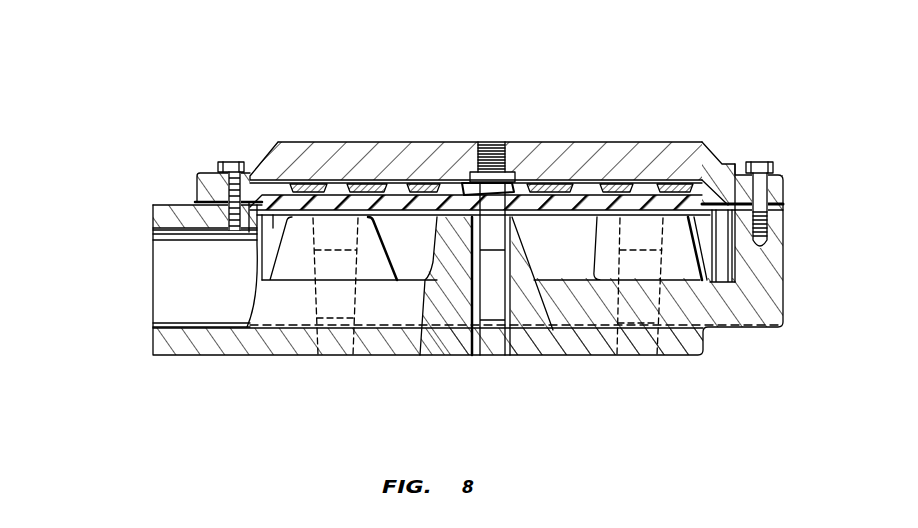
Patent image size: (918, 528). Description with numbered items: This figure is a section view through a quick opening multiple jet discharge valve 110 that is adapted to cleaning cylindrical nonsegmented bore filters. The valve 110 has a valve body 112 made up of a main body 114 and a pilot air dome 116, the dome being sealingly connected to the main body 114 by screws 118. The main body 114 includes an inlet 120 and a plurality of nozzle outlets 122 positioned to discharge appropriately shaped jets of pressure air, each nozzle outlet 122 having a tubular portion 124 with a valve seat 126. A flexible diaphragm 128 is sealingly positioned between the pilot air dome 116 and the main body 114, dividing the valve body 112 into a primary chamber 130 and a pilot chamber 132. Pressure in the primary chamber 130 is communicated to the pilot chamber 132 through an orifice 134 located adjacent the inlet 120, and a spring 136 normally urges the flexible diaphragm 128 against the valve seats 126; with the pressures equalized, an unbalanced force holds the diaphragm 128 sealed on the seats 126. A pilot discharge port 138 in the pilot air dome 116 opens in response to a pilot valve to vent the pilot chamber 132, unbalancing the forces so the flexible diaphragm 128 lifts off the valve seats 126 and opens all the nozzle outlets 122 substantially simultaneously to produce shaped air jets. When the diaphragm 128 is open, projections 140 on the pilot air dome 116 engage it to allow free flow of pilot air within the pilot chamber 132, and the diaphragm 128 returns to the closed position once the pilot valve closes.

The quick opening multiple jet discharge valve 110 is at (678, 122).
The valve body 112 is at (783, 277).
The main body 114 is at (783, 310).
The pilot air dome 116 is at (575, 142).
The screws 118 is at (230, 162).
The inlet 120 is at (175, 297).
The nozzle outlets 122 is at (328, 362).
The tubular portion 124 is at (432, 300).
The valve seat 126 is at (458, 148).
The flexible diaphragm 128 is at (224, 176).
The primary chamber 130 is at (720, 253).
The pilot chamber 132 is at (708, 188).
The orifice 134 is at (237, 253).
The spring 136 is at (515, 148).
The pilot discharge port 138 is at (487, 150).
The projections 140 is at (306, 180).